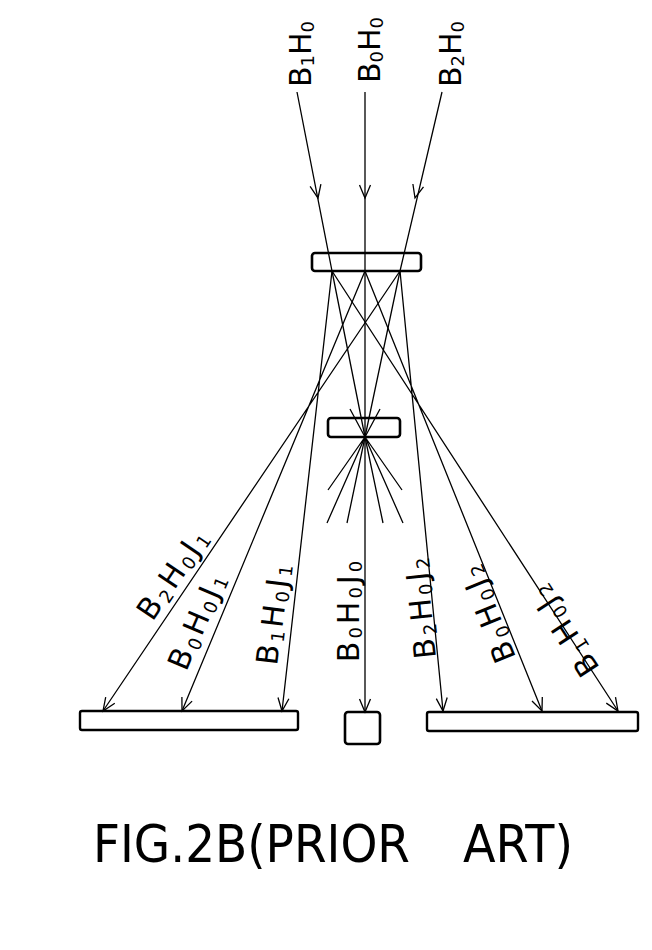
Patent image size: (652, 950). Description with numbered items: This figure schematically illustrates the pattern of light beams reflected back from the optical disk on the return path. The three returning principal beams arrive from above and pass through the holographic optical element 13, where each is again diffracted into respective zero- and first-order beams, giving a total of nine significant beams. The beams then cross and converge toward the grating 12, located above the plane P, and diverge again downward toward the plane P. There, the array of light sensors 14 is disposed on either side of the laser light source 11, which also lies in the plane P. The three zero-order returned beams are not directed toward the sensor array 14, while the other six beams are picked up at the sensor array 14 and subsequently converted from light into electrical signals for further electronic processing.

The laser light source 11 is at (361, 752).
The grating 12 is at (328, 428).
The holographic optical element 13 is at (312, 261).
The array of light sensors 14 is at (359, 744).